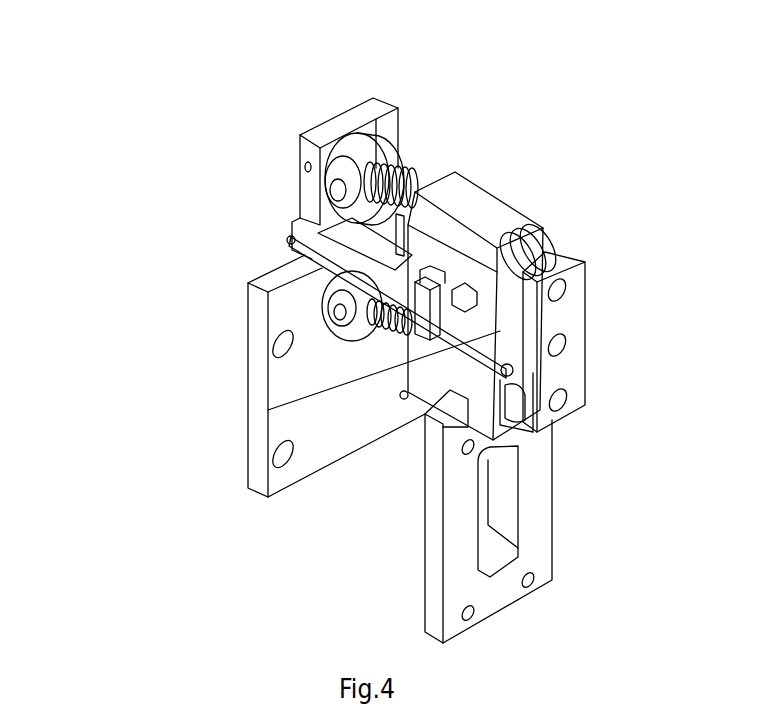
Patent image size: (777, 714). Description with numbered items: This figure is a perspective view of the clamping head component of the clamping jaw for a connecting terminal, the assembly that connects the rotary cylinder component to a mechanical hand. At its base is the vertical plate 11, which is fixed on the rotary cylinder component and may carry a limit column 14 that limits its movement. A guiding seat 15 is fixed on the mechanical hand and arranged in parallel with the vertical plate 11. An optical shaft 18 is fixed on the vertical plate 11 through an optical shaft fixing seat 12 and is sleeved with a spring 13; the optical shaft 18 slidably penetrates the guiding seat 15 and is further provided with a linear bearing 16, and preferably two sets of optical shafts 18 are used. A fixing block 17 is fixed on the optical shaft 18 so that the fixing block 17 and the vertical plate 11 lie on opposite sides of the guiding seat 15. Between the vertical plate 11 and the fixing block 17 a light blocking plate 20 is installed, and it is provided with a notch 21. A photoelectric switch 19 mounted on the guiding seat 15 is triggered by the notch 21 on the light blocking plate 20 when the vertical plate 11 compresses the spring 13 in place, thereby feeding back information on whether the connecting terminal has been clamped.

The vertical plate 11 is at (263, 273).
The optical shaft fixing seat 12 is at (320, 118).
The spring 13 is at (405, 170).
The limit column 14 is at (398, 245).
The guiding seat 15 is at (462, 190).
The linear bearing 16 is at (543, 232).
The fixing block 17 is at (570, 320).
The optical shaft 18 is at (340, 313).
The photoelectric switch 19 is at (385, 316).
The light blocking plate 20 is at (408, 381).
The notch 21 is at (500, 370).